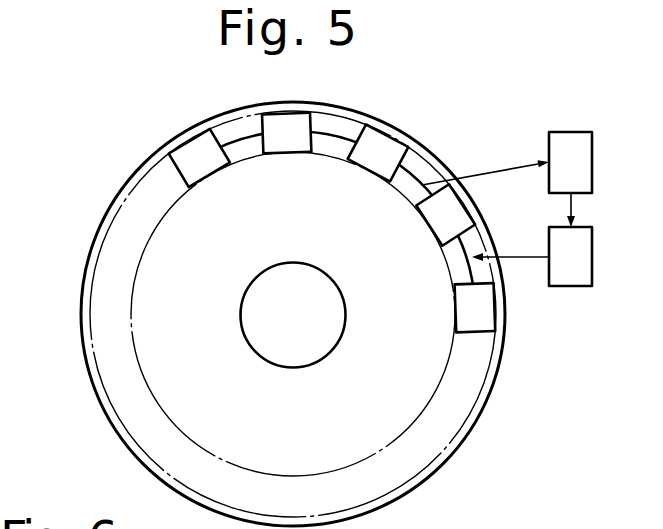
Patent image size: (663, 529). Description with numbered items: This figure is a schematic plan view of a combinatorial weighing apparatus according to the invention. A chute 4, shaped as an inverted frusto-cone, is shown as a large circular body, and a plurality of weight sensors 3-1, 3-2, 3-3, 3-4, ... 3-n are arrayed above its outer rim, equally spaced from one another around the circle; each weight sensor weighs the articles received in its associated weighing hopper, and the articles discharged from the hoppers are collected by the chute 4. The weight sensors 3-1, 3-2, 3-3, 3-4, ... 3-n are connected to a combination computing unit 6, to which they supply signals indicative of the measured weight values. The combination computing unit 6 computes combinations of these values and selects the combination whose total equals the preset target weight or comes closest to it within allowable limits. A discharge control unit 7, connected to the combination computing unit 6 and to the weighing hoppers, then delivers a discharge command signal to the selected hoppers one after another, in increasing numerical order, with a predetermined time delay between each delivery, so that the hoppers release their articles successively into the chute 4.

The chute 4 is at (101, 393).
The weight sensor 3-n is at (205, 177).
The weight sensor 3-1 is at (286, 153).
The weight sensor 3-2 is at (373, 167).
The weight sensor 3-3 is at (424, 231).
The weight sensor 3-4 is at (455, 308).
The combination computing unit 6 is at (573, 138).
The discharge control unit 7 is at (568, 286).